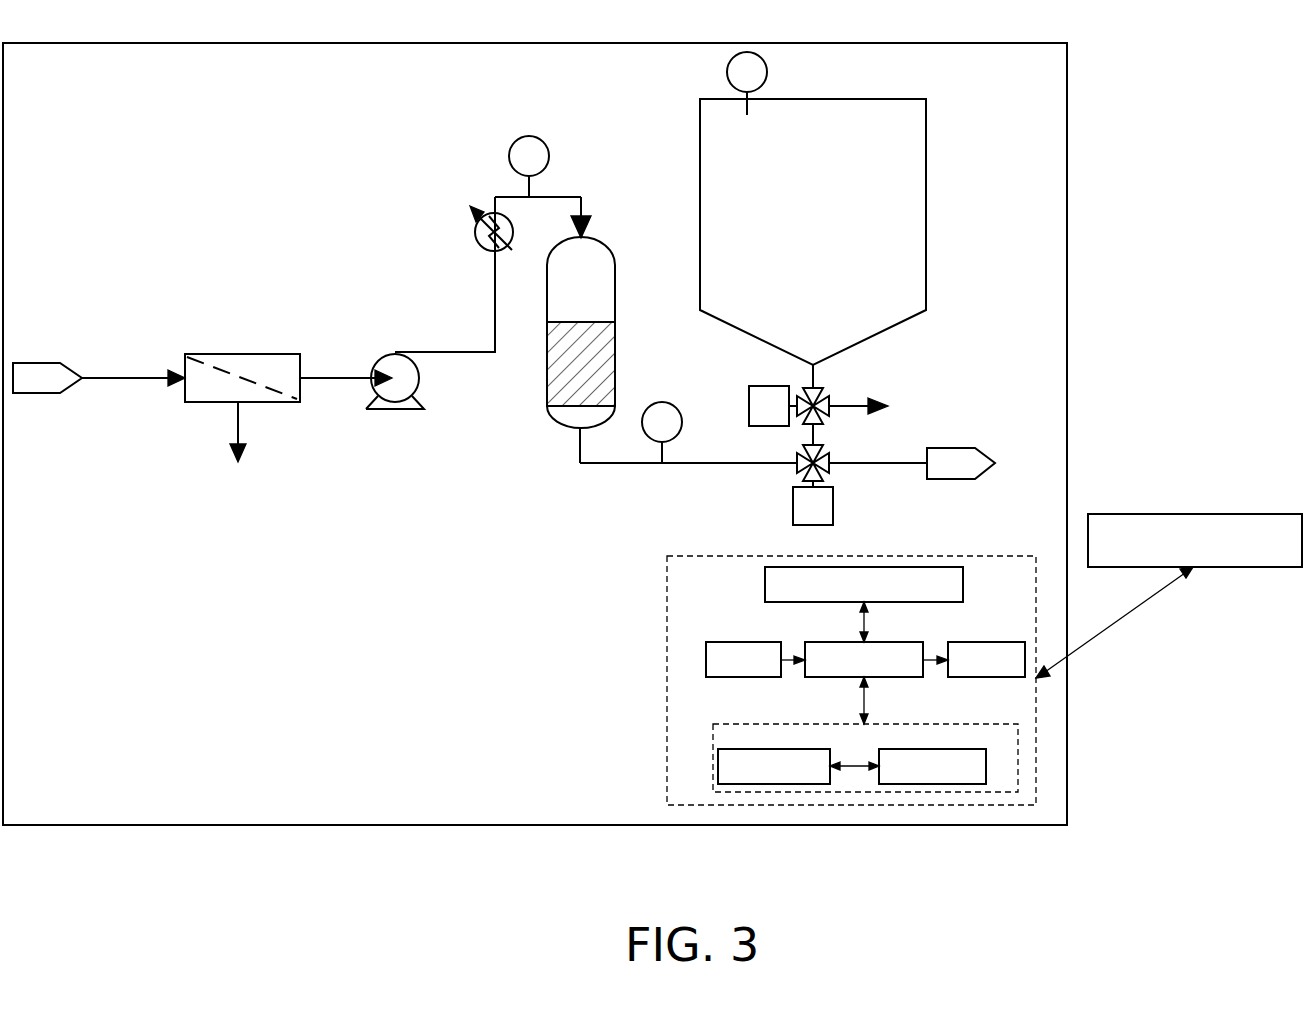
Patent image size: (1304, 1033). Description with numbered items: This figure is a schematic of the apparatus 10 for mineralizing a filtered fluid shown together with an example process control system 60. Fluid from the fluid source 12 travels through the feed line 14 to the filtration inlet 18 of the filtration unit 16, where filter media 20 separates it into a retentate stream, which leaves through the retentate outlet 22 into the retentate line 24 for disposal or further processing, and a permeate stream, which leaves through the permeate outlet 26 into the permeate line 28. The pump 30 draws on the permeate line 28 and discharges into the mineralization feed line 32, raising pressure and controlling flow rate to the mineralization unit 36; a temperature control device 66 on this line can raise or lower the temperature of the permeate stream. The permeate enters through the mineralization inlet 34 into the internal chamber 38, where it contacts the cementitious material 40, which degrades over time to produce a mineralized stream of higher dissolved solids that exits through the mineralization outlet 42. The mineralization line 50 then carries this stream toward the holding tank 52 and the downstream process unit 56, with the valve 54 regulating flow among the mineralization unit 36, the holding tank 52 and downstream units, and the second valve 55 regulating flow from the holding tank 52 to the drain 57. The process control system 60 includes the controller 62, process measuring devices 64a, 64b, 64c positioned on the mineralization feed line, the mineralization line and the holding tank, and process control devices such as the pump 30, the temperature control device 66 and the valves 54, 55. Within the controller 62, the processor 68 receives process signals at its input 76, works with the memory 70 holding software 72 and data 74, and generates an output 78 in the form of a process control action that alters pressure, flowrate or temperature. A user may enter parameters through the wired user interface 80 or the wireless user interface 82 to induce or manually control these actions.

The apparatus 10 is at (170, 127).
The fluid source 12 is at (52, 389).
The feed line 14 is at (106, 380).
The filtration unit 16 is at (246, 354).
The filtration inlet 18 is at (184, 384).
The filter media 20 is at (210, 358).
The retentate outlet 22 is at (236, 412).
The retentate line 24 is at (239, 420).
The permeate outlet 26 is at (300, 382).
The permeate line 28 is at (320, 380).
The pump 30 is at (418, 372).
The mineralization feed line 32 is at (449, 353).
The mineralization inlet 34 is at (588, 238).
The mineralization unit 36 is at (615, 282).
The internal chamber 38 is at (556, 294).
The cementitious material 40 is at (605, 373).
The mineralization outlet 42 is at (583, 432).
The mineralization line 50 is at (691, 463).
The holding tank 52 is at (926, 152).
The valve 54 is at (813, 474).
The second valve 55 is at (789, 406).
The downstream process unit 56 is at (963, 474).
The drain 57 is at (841, 406).
The process control system 60 is at (643, 662).
The controller 62 is at (916, 556).
The process measuring device 64a is at (538, 166).
The process measuring device 64b is at (662, 432).
The process measuring device 64c is at (747, 83).
The temperature control device 66 is at (476, 245).
The processor 68 is at (884, 642).
The memory 70 is at (904, 724).
The software 72 is at (830, 760).
The data 74 is at (986, 760).
The input 76 is at (754, 642).
The output 78 is at (996, 642).
The wired user interface 80 is at (963, 600).
The wireless user interface 82 is at (1178, 514).